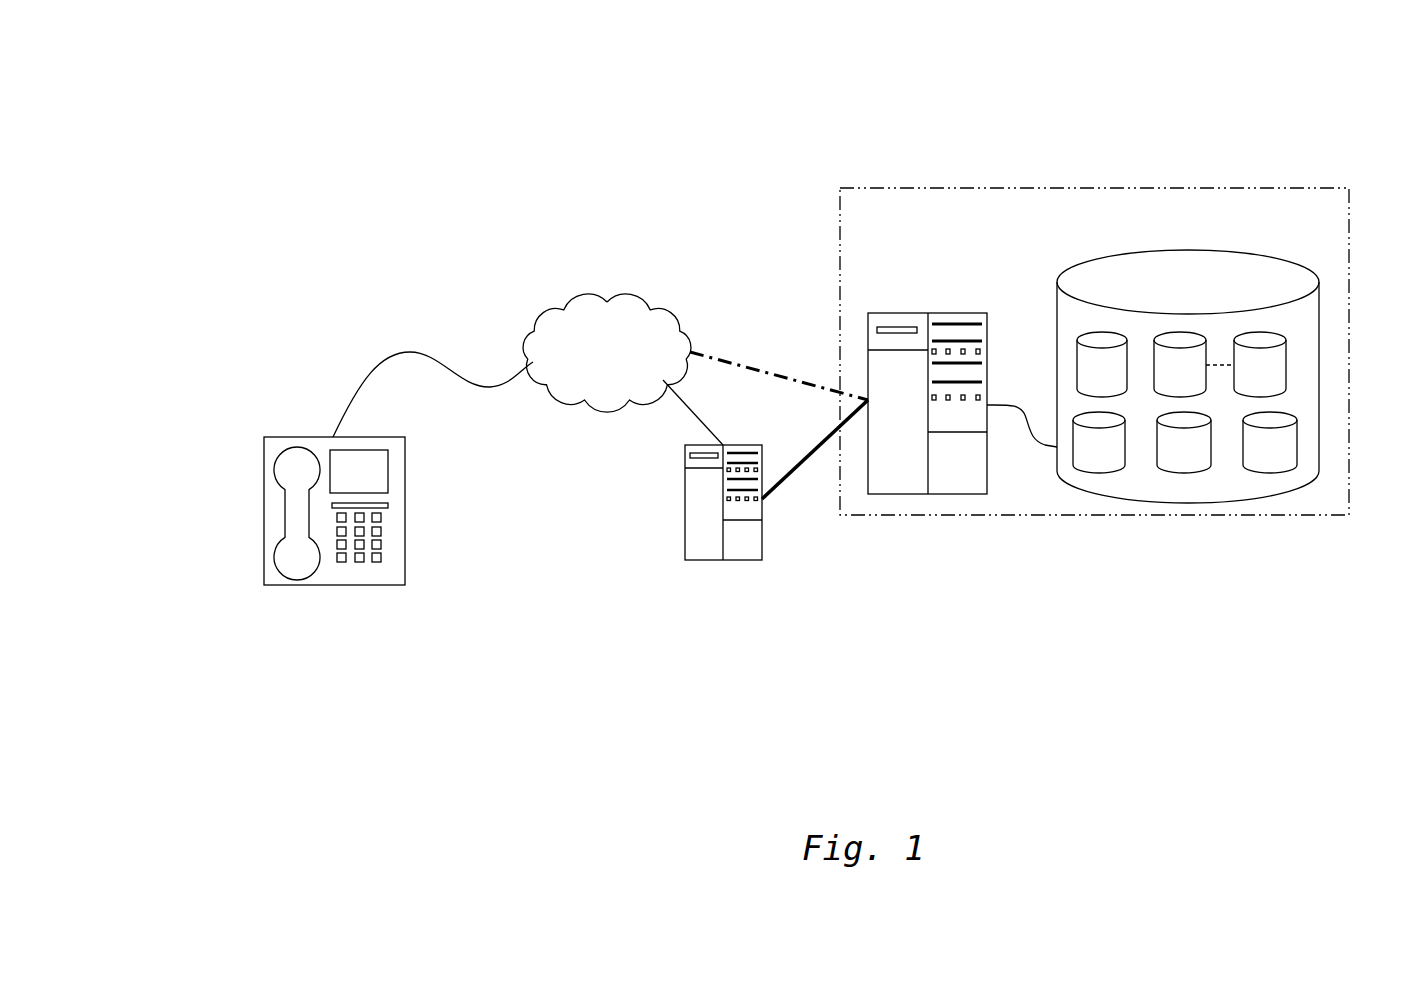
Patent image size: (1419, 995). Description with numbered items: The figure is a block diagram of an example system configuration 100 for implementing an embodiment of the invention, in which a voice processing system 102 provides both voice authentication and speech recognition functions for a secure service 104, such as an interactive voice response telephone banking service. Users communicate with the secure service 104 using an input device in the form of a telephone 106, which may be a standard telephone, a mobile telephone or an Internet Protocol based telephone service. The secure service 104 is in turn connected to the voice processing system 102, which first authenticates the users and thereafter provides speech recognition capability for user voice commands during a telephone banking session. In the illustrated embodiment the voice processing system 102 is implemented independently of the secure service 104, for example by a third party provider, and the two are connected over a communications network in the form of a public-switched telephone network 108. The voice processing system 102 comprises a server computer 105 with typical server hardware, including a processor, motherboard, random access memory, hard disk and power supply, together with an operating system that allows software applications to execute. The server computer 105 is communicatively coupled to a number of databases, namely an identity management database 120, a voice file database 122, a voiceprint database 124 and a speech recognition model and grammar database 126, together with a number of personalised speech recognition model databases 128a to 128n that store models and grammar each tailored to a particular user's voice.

The system configuration 100 is at (375, 118).
The voice processing system 102 is at (1093, 182).
The secure service 104 is at (684, 528).
The server computer 105 is at (909, 312).
The telephone 106 is at (406, 515).
The public-switched telephone network 108 is at (615, 294).
The identity management database 120 is at (1100, 478).
The voice file database 122 is at (1185, 478).
The voiceprint database 124 is at (1272, 478).
The speech recognition model and grammar database 126 is at (1100, 332).
The personalised speech recognition model database 128a is at (1178, 332).
The personalised speech recognition model database 128n is at (1257, 332).